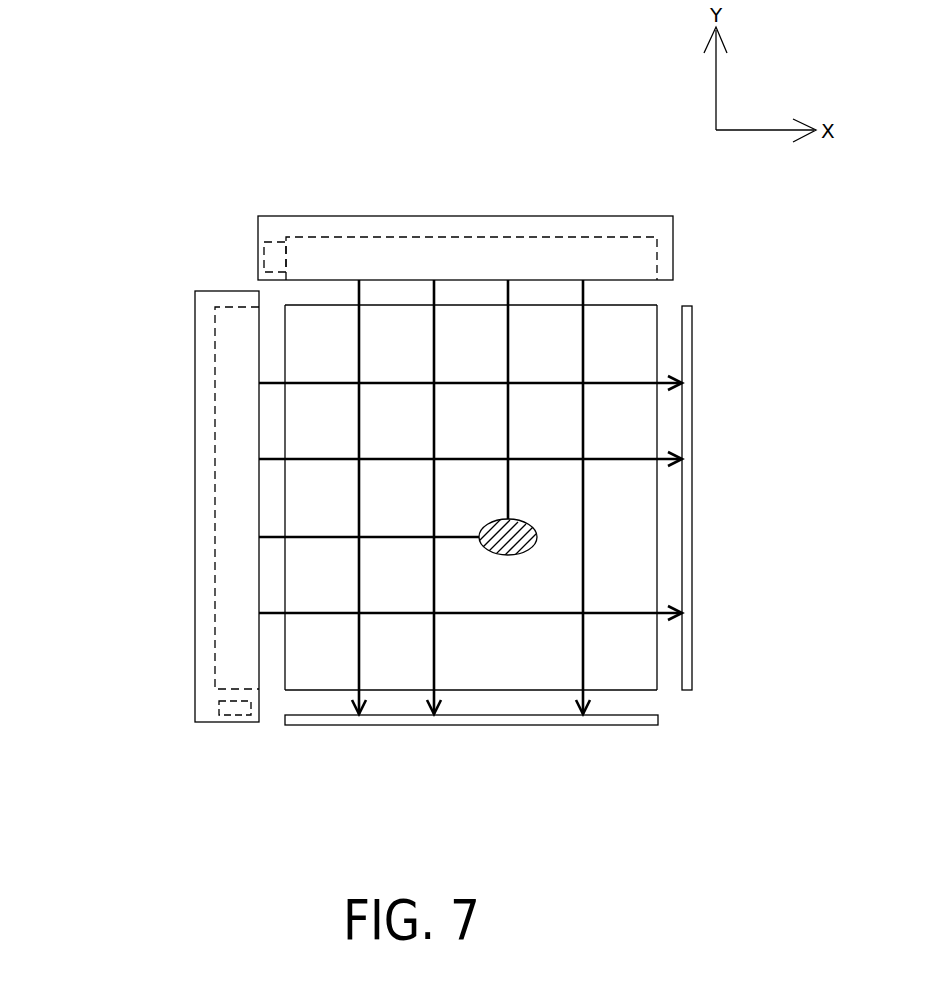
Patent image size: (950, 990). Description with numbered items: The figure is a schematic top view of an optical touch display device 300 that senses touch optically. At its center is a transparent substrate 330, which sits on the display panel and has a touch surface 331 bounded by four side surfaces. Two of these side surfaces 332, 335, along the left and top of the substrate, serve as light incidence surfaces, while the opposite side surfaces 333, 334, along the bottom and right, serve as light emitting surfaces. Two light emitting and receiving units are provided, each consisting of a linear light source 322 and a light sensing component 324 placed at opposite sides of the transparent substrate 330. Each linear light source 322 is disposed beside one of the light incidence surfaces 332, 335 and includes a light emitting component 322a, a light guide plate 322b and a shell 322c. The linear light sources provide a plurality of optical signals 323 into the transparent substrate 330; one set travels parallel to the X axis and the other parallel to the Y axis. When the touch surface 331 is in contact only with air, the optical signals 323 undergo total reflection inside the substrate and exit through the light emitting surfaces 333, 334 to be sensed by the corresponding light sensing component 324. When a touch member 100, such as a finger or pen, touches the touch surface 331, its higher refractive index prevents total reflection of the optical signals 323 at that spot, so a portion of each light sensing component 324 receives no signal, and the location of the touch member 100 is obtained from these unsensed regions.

The touch member 100 is at (535, 524).
The optical touch display device 300 is at (778, 861).
The linear light source 322 is at (144, 509).
The light emitting component 322a is at (219, 710).
The light guide plate 322b is at (215, 670).
The shell 322c is at (195, 629).
The optical signals 323 is at (279, 382).
The light sensing component 324 is at (693, 530).
The transparent substrate 330 is at (457, 463).
The touch surface 331 is at (638, 347).
The side surface (light incidence surface) 332 is at (285, 577).
The side surface (light emitting surface) 333 is at (512, 690).
The side surface (light emitting surface) 334 is at (658, 573).
The side surface (light incidence surface) 335 is at (543, 305).